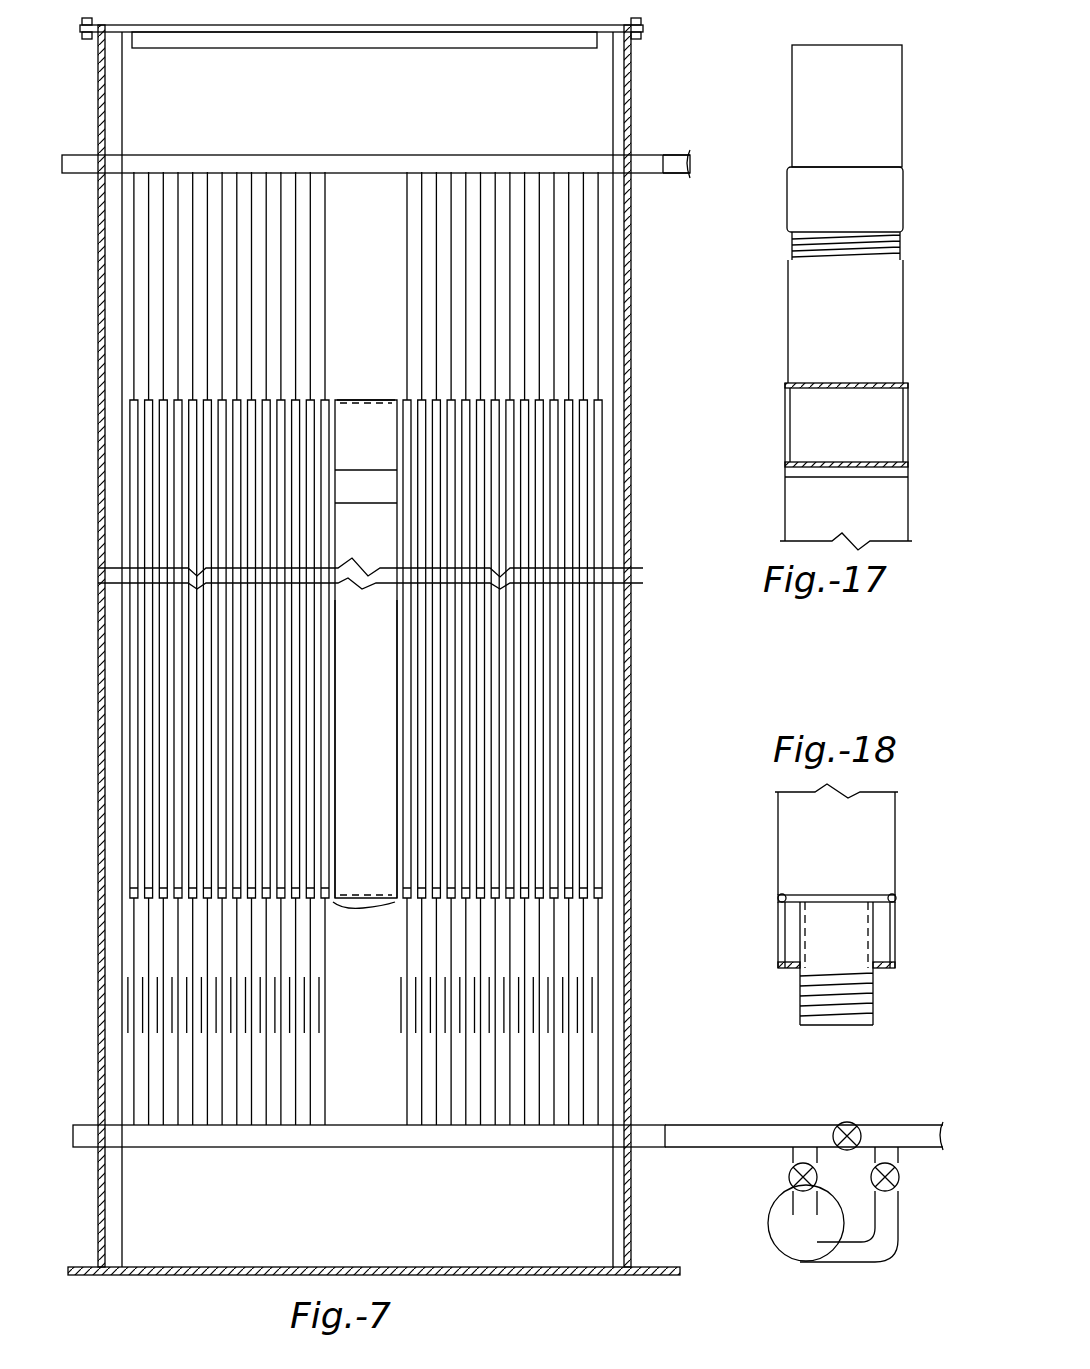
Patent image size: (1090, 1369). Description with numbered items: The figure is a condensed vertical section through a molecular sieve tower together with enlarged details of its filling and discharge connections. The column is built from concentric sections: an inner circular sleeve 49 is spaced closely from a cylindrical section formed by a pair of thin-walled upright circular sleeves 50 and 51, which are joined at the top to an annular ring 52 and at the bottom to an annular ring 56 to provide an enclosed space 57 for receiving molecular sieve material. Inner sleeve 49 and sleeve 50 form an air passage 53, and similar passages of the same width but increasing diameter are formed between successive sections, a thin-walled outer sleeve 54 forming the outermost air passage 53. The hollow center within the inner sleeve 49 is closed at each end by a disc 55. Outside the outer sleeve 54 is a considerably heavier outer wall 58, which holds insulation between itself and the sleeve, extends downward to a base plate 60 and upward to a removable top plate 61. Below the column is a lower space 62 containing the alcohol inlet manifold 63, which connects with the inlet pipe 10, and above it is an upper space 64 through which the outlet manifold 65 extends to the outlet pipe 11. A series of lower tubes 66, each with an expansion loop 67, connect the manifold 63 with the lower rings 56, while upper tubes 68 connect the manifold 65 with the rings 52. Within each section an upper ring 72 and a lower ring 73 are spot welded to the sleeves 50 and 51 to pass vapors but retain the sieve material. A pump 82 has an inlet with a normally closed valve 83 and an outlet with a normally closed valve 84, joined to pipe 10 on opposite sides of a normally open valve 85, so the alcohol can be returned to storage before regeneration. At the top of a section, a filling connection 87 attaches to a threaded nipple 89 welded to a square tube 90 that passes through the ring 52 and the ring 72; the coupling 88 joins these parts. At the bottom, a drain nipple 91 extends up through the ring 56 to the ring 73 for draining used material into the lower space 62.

In FIG. 7, the inlet pipe 10 is at (706, 1126).
In FIG. 7, the outlet pipe 11 is at (676, 150).
In FIG. 7, the inner circular sleeve 49 is at (366, 649).
In FIG. 7, the upright circular sleeve 50 is at (394, 618).
In FIG. 17, the upright circular sleeve 50 is at (771, 448).
In FIG. 18, the upright circular sleeve 50 is at (778, 834).
In FIG. 7, the upright circular sleeve 51 is at (394, 646).
In FIG. 17, the upright circular sleeve 51 is at (914, 452).
In FIG. 18, the upright circular sleeve 51 is at (894, 838).
In FIG. 7, the annular ring 52 is at (329, 399).
In FIG. 17, the annular ring 52 is at (836, 383).
In FIG. 7, the air passage 53 is at (394, 512).
In FIG. 7, the outer sleeve 54 is at (122, 92).
In FIG. 7, the disc 55 is at (355, 430).
In FIG. 7, the annular ring 56 is at (364, 924).
In FIG. 18, the annular ring 56 is at (896, 968).
In FIG. 7, the enclosed space 57 is at (394, 482).
In FIG. 17, the enclosed space 57 is at (846, 513).
In FIG. 18, the enclosed space 57 is at (836, 839).
In FIG. 7, the outer wall 58 is at (98, 128).
In FIG. 7, the base plate 60 is at (502, 1266).
In FIG. 7, the top plate 61 is at (451, 32).
In FIG. 7, the lower space 62 is at (364, 1207).
In FIG. 7, the alcohol inlet manifold 63 is at (408, 1148).
In FIG. 7, the upper space 64 is at (364, 101).
In FIG. 7, the outlet manifold 65 is at (398, 156).
In FIG. 7, the lower tubes 66 is at (396, 974).
In FIG. 7, the expansion loop 67 is at (396, 1008).
In FIG. 7, the upper tubes 68 is at (325, 266).
In FIG. 17, the upper ring 72 is at (864, 444).
In FIG. 18, the lower ring 73 is at (792, 894).
In FIG. 7, the pump 82 is at (768, 1236).
In FIG. 7, the valve 83 is at (790, 1180).
In FIG. 7, the valve 84 is at (900, 1182).
In FIG. 7, the valve 85 is at (848, 1122).
In FIG. 17, the filling connection 87 is at (900, 102).
In FIG. 17, the coupling 88 is at (900, 203).
In FIG. 17, the threaded nipple 89 is at (904, 250).
In FIG. 17, the square tube 90 is at (904, 330).
In FIG. 18, the drain nipple 91 is at (800, 978).